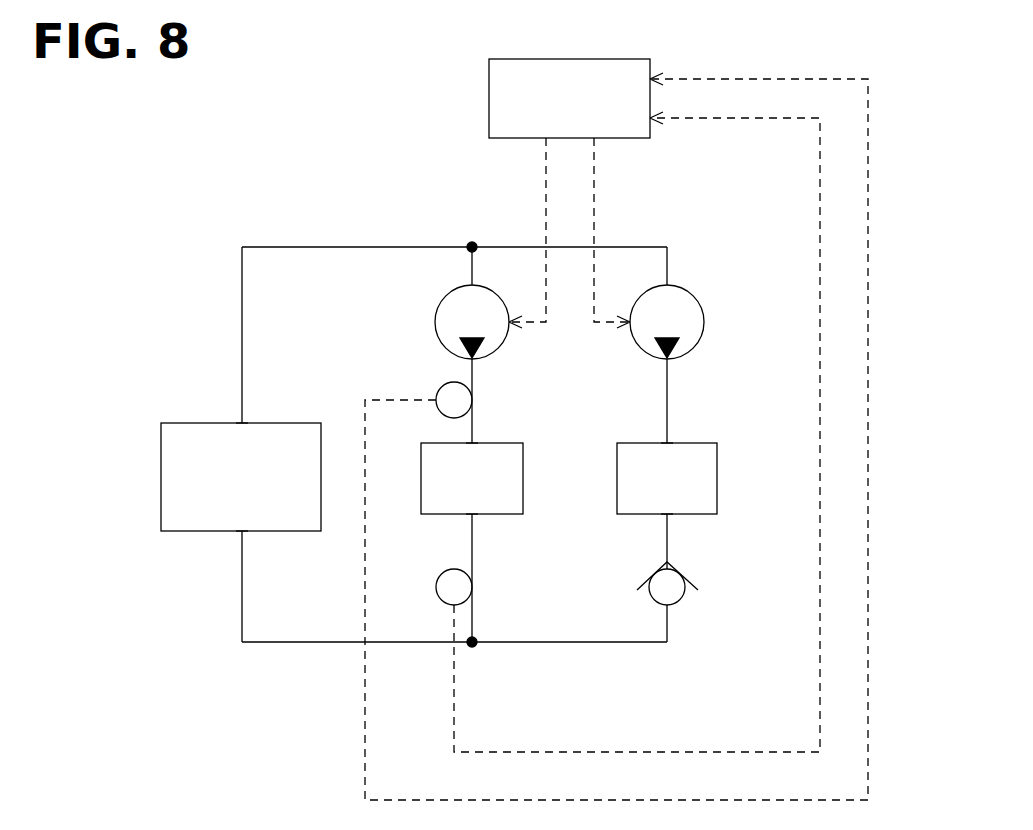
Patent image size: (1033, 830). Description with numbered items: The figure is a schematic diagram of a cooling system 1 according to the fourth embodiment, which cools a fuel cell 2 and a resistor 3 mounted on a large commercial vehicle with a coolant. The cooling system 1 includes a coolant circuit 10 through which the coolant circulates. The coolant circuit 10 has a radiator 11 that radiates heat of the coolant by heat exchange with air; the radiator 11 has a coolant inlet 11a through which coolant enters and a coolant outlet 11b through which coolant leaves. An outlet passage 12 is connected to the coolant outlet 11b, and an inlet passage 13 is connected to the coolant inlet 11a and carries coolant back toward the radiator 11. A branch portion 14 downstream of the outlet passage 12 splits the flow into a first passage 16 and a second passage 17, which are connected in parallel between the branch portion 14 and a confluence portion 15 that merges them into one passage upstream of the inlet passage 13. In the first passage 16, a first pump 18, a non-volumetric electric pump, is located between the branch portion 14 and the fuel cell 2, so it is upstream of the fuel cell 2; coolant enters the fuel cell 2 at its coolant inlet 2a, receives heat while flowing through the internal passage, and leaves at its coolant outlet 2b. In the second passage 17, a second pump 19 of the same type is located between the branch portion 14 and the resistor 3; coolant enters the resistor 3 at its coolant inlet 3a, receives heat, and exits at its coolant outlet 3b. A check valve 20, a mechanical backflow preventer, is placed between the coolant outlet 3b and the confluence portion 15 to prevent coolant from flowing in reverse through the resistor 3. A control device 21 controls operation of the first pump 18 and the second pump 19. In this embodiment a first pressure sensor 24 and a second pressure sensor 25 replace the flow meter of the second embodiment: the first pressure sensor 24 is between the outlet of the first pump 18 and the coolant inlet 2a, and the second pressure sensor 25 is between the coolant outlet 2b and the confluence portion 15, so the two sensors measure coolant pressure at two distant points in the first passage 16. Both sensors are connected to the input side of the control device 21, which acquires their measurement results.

The cooling system 1 is at (236, 158).
The fuel cell 2 is at (524, 465).
The coolant inlet 2a is at (477, 433).
The coolant outlet 2b is at (476, 520).
The resistor 3 is at (718, 465).
The coolant inlet 3a is at (668, 440).
The coolant outlet 3b is at (669, 522).
The coolant circuit 10 is at (240, 300).
The radiator 11 is at (160, 452).
The coolant inlet 11a is at (240, 534).
The coolant outlet 11b is at (240, 421).
The outlet passage 12 is at (316, 245).
The inlet passage 13 is at (328, 643).
The branch portion 14 is at (471, 244).
The confluence portion 15 is at (473, 647).
The first passage 16 is at (476, 375).
The second passage 17 is at (669, 382).
The first pump 18 is at (436, 312).
The second pump 19 is at (704, 312).
The check valve 20 is at (698, 585).
The control device 21 is at (620, 58).
The first pressure sensor 24 is at (442, 387).
The second pressure sensor 25 is at (440, 575).